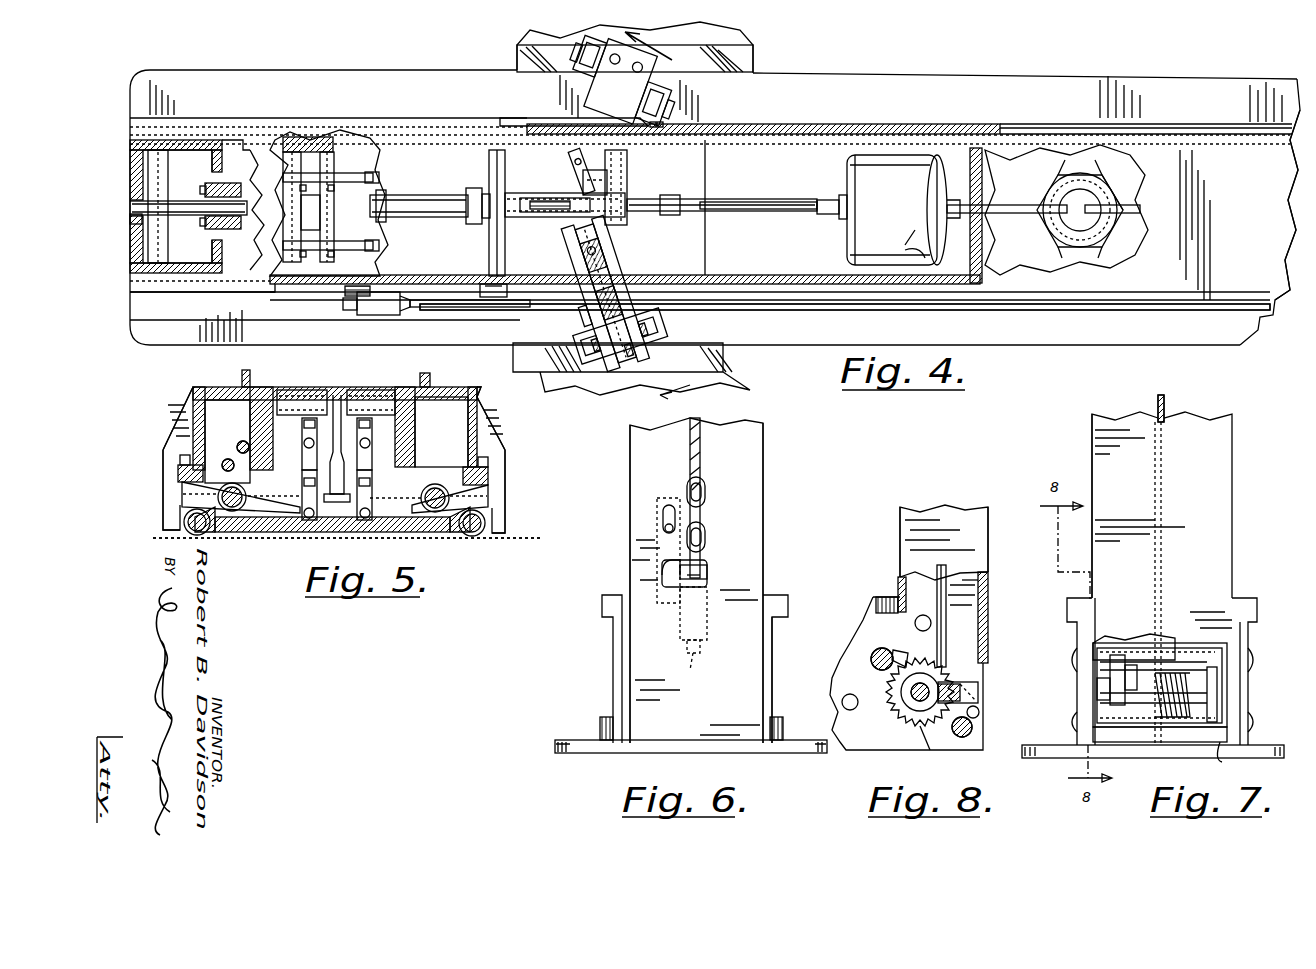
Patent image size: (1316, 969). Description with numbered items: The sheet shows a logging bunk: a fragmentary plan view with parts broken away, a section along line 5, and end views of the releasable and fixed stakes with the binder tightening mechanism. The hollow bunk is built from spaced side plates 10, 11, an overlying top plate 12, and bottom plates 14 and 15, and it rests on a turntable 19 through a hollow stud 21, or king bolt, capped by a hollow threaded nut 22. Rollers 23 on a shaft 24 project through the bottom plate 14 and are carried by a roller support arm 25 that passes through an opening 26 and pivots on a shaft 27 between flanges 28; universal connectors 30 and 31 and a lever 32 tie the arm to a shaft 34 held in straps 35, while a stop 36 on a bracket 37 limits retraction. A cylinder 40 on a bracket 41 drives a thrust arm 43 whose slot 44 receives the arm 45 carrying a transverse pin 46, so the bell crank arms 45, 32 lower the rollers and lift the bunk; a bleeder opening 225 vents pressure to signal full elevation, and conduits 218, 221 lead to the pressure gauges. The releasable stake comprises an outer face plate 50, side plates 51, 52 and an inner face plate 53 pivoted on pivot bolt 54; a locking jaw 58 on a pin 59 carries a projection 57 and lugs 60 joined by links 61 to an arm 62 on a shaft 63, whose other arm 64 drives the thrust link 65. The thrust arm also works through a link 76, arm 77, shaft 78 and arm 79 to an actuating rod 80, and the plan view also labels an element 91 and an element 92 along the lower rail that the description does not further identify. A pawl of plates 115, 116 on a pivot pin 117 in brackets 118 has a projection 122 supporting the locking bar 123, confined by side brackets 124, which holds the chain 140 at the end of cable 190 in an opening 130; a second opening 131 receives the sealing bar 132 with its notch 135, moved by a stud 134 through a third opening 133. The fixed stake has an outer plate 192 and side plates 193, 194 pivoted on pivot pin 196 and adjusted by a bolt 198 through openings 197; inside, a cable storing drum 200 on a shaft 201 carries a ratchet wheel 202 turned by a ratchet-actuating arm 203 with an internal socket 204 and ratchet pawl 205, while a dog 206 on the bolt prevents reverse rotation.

In FIG. 4, the section line 5— 5 is at (657, 217).
In FIG. 5, the side plate 10 is at (248, 425).
In FIG. 6, the side plate 10 is at (772, 668).
In FIG. 7, the side plate 10 is at (1077, 630).
In FIG. 4, the side plate 11 is at (825, 124).
In FIG. 5, the side plate 11 is at (415, 443).
In FIG. 6, the side plate 11 is at (613, 660).
In FIG. 7, the side plate 11 is at (1248, 630).
In FIG. 4, the top plate 12 is at (1245, 232).
In FIG. 5, the top plate 12 is at (272, 385).
In FIG. 6, the top plate 12 is at (772, 597).
In FIG. 8, the top plate 12 is at (885, 597).
In FIG. 7, the top plate 12 is at (1240, 598).
In FIG. 4, the bottom plate 14 is at (715, 243).
In FIG. 5, the bottom plate 14 is at (505, 530).
In FIG. 6, the bottom plate 15 is at (613, 753).
In FIG. 7, the bottom plate 15 is at (1052, 758).
In FIG. 4, the turntable 19 is at (740, 30).
In FIG. 5, the turntable 19 is at (500, 538).
In FIG. 4, the hollow stud 21 is at (1110, 180).
In FIG. 4, the threaded nut 22 is at (1050, 182).
In FIG. 4, the rollers 23 is at (578, 372).
In FIG. 5, the rollers 23 is at (208, 533).
In FIG. 4, the shaft 24 is at (565, 354).
In FIG. 5, the shaft 24 is at (472, 536).
In FIG. 4, the roller support arm 25 is at (572, 165).
In FIG. 5, the roller support arm 25 is at (182, 494).
In FIG. 4, the opening 26 is at (648, 262).
In FIG. 5, the opening 26 is at (425, 470).
In FIG. 4, the shaft 27 is at (572, 314).
In FIG. 5, the shaft 27 is at (437, 485).
In FIG. 4, the flanges 28 is at (655, 60).
In FIG. 5, the flanges 28 is at (185, 422).
In FIG. 5, the universal connector 30 is at (302, 482).
In FIG. 5, the universal connector 31 is at (302, 450).
In FIG. 4, the lever 32 is at (607, 180).
In FIG. 4, the shaft 34 is at (625, 225).
In FIG. 5, the shaft 34 is at (362, 392).
In FIG. 4, the straps 35 is at (668, 140).
In FIG. 5, the stop 36 is at (178, 470).
In FIG. 5, the bracket 37 is at (484, 426).
In FIG. 4, the cylinder 40 is at (850, 166).
In FIG. 4, the bracket 41 is at (970, 262).
In FIG. 4, the thrust arm 43 is at (800, 202).
In FIG. 5, the thrust arm 43 is at (337, 506).
In FIG. 4, the longitudinal slot 44 is at (745, 203).
In FIG. 4, the arm 45 is at (640, 199).
In FIG. 5, the arm 45 is at (337, 392).
In FIG. 4, the transverse pin 46 is at (665, 195).
In FIG. 4, the outer face plate 50 is at (132, 165).
In FIG. 6, the outer face plate 50 is at (763, 465).
In FIG. 4, the side plate 51 is at (182, 251).
In FIG. 4, the side plate 52 is at (182, 159).
In FIG. 4, the inner face plate 53 is at (230, 160).
In FIG. 4, the pivot bolt 54 is at (165, 112).
In FIG. 6, the pivot bolt 54 is at (600, 725).
In FIG. 4, the projection 57 is at (258, 262).
In FIG. 4, the locking jaw 58 is at (305, 214).
In FIG. 4, the pin 59 is at (334, 195).
In FIG. 4, the lugs 60 is at (290, 175).
In FIG. 4, the links 61 is at (306, 135).
In FIG. 4, the arm 62 is at (360, 186).
In FIG. 4, the shaft 63 is at (372, 265).
In FIG. 4, the arm 64 is at (383, 205).
In FIG. 4, the thrust link 65 is at (452, 218).
In FIG. 4, the link 76 is at (548, 193).
In FIG. 4, the arm 77 is at (470, 225).
In FIG. 4, the shaft 78 is at (489, 255).
In FIG. 4, the arm 79 is at (488, 298).
In FIG. 4, the actuating rod 80 is at (832, 300).
In FIG. 5, the actuating rod 80 is at (240, 442).
In FIG. 4, the valve 91 is at (380, 314).
In FIG. 4, the rail 92 is at (500, 310).
In FIG. 5, the rail 92 is at (227, 459).
In FIG. 4, the pawl plate 115 is at (168, 205).
In FIG. 4, the pawl plate 116 is at (240, 200).
In FIG. 4, the pivot pin 117 is at (230, 220).
In FIG. 4, the brackets 118 is at (200, 186).
In FIG. 6, the projection 122 is at (688, 672).
In FIG. 4, the locking bar 123 is at (130, 208).
In FIG. 6, the locking bar 123 is at (707, 587).
In FIG. 4, the side brackets 124 is at (132, 222).
In FIG. 6, the opening 130 is at (708, 572).
In FIG. 6, the second opening 131 is at (662, 565).
In FIG. 6, the sealing bar 132 is at (658, 555).
In FIG. 6, the third opening 133 is at (665, 508).
In FIG. 6, the stud 134 is at (665, 526).
In FIG. 6, the notch 135 is at (662, 573).
In FIG. 6, the chain 140 is at (708, 487).
In FIG. 6, the cable 190 is at (700, 458).
In FIG. 8, the cable 190 is at (946, 572).
In FIG. 7, the cable 190 is at (1165, 407).
In FIG. 8, the outer plate 192 is at (988, 595).
In FIG. 7, the outer plate 192 is at (1092, 462).
In FIG. 8, the side plate 193 is at (900, 530).
In FIG. 8, the side plate 194 is at (970, 580).
In FIG. 8, the pivot pin 196 is at (965, 738).
In FIG. 7, the pivot pin 196 is at (1234, 761).
In FIG. 8, the openings 197 is at (914, 623).
In FIG. 8, the bolt 198 is at (871, 662).
In FIG. 7, the bolt 198 is at (1250, 672).
In FIG. 7, the cable storing drum 200 is at (1158, 727).
In FIG. 7, the shaft 201 is at (1222, 705).
In FIG. 8, the ratchet wheel 202 is at (900, 718).
In FIG. 7, the ratchet wheel 202 is at (1110, 665).
In FIG. 8, the ratchet-actuating arm 203 is at (940, 758).
In FIG. 7, the ratchet-actuating arm 203 is at (1110, 682).
In FIG. 8, the internal socket 204 is at (978, 690).
In FIG. 7, the internal socket 204 is at (1097, 690).
In FIG. 8, the ratchet pawl 205 is at (968, 682).
In FIG. 7, the ratchet pawl 205 is at (1100, 700).
In FIG. 8, the dog 206 is at (898, 652).
In FIG. 7, the dog 206 is at (1118, 655).
In FIG. 4, the conduit 218 is at (1012, 218).
In FIG. 4, the conduit 221 is at (1140, 205).
In FIG. 4, the bleeder opening 225 is at (880, 250).